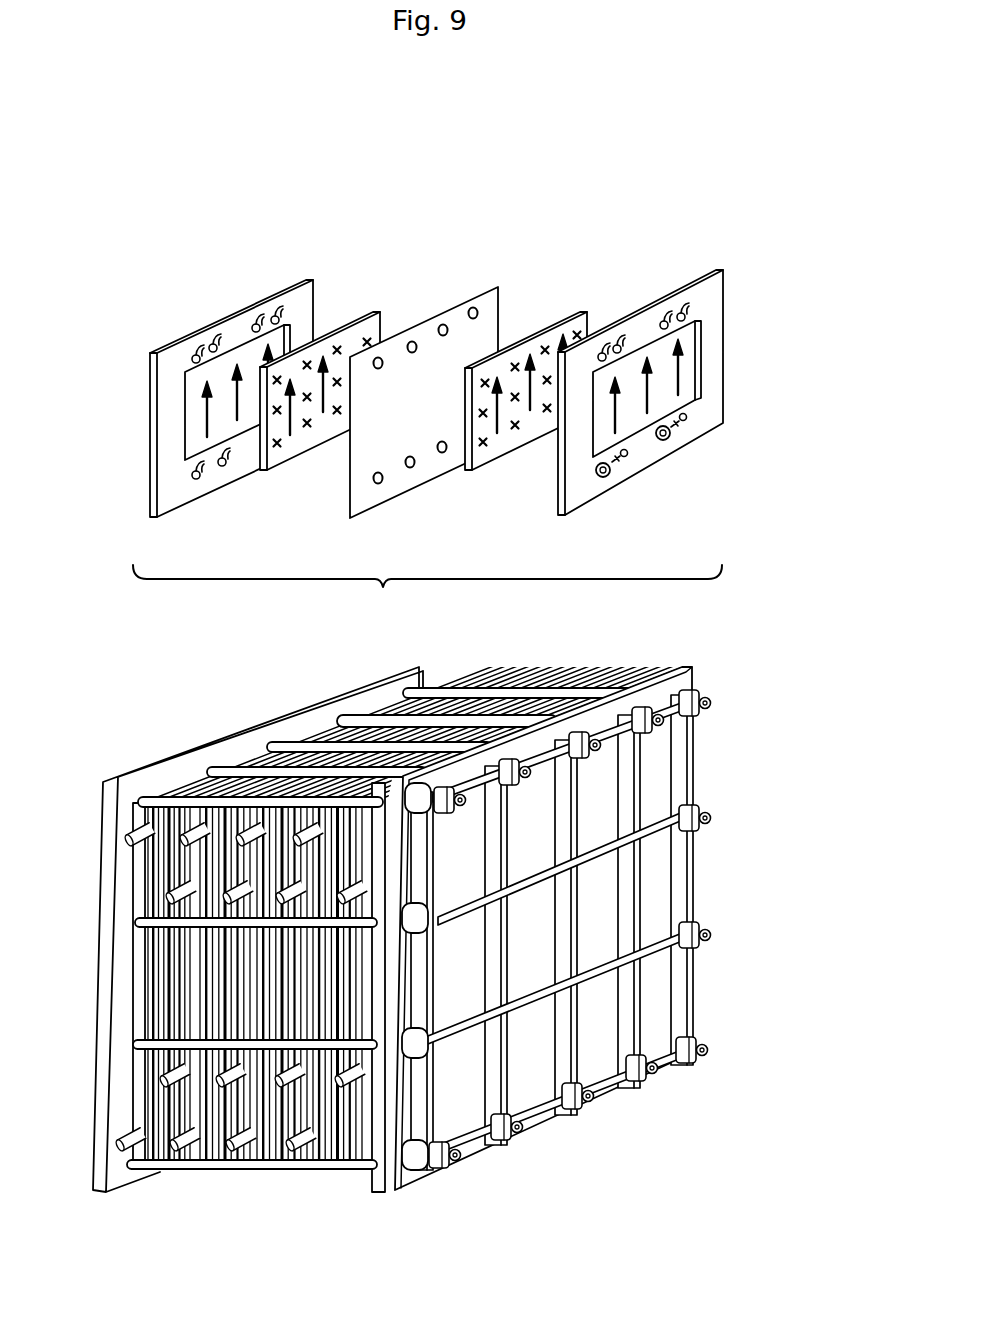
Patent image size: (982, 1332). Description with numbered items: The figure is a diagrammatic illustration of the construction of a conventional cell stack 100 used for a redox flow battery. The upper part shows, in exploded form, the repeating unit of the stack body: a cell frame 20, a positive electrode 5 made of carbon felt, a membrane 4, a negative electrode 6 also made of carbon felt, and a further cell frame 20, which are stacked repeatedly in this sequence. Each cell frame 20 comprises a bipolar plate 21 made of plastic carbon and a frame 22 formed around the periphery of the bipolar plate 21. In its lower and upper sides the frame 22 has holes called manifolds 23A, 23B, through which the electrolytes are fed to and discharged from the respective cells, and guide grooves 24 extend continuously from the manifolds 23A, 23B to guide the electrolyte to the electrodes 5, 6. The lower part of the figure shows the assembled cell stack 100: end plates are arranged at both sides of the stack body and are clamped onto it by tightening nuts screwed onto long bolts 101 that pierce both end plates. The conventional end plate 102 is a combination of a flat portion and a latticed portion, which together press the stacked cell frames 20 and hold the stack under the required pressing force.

The cell frame 20 is at (188, 324).
The positive electrode 5 is at (350, 323).
The membrane 4 is at (452, 307).
The negative electrode 6 is at (543, 323).
The guide grooves 24 is at (607, 352).
The frame 22 is at (680, 386).
The bipolar plate 21 is at (687, 366).
The manifold 23A is at (665, 441).
The manifold 23B is at (688, 424).
The cell stack 100 is at (537, 982).
The long bolts 101 is at (440, 1162).
The end plate 102 is at (556, 965).